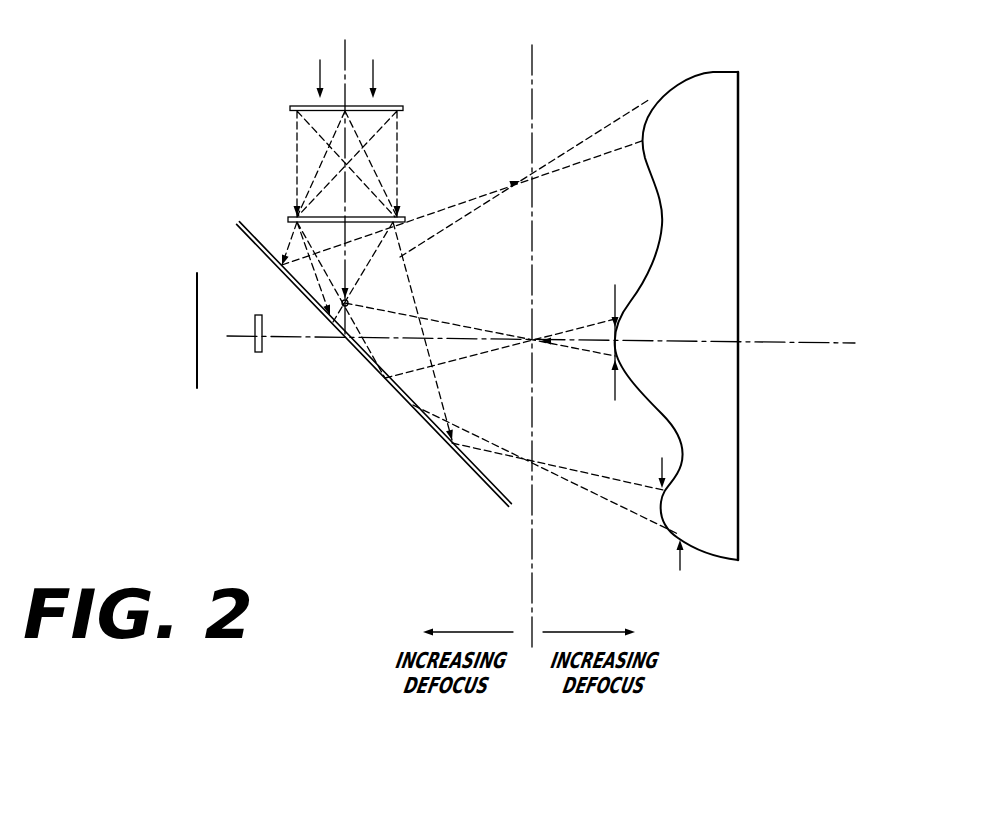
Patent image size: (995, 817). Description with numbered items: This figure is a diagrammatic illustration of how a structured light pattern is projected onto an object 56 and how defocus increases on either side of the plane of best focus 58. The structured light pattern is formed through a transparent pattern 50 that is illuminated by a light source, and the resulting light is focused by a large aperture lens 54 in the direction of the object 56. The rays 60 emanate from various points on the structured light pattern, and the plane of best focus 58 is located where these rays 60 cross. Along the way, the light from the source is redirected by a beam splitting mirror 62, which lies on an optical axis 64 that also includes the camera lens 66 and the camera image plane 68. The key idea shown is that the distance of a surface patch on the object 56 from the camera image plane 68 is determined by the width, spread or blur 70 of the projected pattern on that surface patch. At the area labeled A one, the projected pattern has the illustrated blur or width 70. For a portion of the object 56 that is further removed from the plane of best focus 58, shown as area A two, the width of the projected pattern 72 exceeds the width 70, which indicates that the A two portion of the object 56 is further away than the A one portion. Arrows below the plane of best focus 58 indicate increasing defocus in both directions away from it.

The transparent pattern 50 is at (296, 104).
The large aperture lens 54 is at (398, 41).
The object 56 is at (738, 213).
The plane of best focus 58 is at (529, 583).
The rays 60 is at (468, 208).
The beam splitting mirror 62 is at (467, 462).
The optical axis 64 is at (757, 342).
The camera lens 66 is at (258, 353).
The camera image plane 68 is at (193, 366).
The blur 70 is at (587, 341).
The width of projected pattern 72 is at (647, 507).